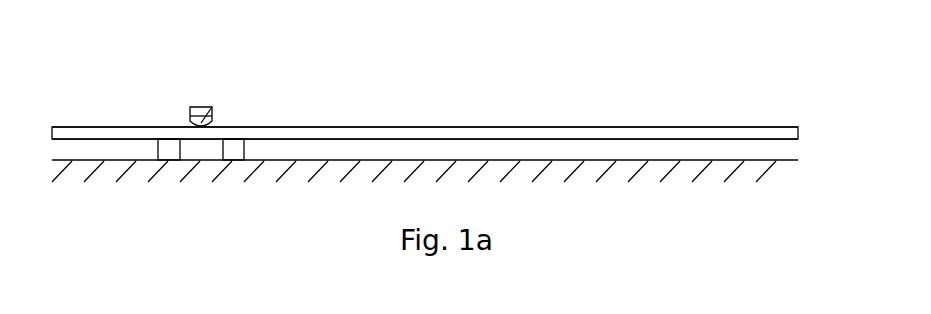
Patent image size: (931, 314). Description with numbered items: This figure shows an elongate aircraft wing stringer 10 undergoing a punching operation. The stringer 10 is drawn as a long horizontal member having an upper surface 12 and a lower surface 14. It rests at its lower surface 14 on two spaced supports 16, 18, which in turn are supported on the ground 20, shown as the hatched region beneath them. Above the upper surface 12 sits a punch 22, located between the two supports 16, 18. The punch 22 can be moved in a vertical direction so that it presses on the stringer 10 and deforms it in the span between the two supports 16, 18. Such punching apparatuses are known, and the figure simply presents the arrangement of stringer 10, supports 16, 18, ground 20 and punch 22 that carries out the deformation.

The stringer 10 is at (567, 136).
The upper surface 12 is at (485, 127).
The lower surface 14 is at (650, 139).
The support 16 is at (162, 160).
The support 18 is at (225, 160).
The ground 20 is at (110, 160).
The punch 22 is at (212, 107).